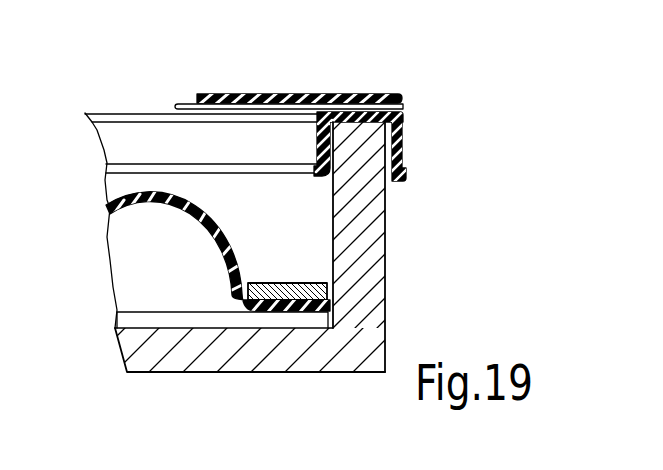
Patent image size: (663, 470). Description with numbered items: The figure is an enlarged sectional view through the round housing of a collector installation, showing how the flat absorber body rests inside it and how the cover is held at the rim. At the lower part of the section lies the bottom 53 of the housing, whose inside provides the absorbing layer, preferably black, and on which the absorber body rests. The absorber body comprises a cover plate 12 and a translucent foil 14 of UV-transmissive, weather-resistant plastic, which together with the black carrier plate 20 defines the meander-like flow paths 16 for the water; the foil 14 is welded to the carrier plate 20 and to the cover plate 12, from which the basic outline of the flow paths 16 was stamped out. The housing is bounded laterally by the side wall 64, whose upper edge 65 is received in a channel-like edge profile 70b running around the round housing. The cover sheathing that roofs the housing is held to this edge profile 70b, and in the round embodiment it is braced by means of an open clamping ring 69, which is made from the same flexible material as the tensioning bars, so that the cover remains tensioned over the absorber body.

The open clamping ring 69 is at (356, 112).
The edge profile 70b is at (127, 142).
The upper edge of the side wall 65 is at (362, 124).
The side wall 64 is at (333, 230).
The cover plate 12 is at (297, 279).
The translucent foil 14 is at (350, 303).
The flow paths 16 is at (167, 262).
The carrier plate 20 is at (237, 320).
The bottom 53 is at (323, 350).